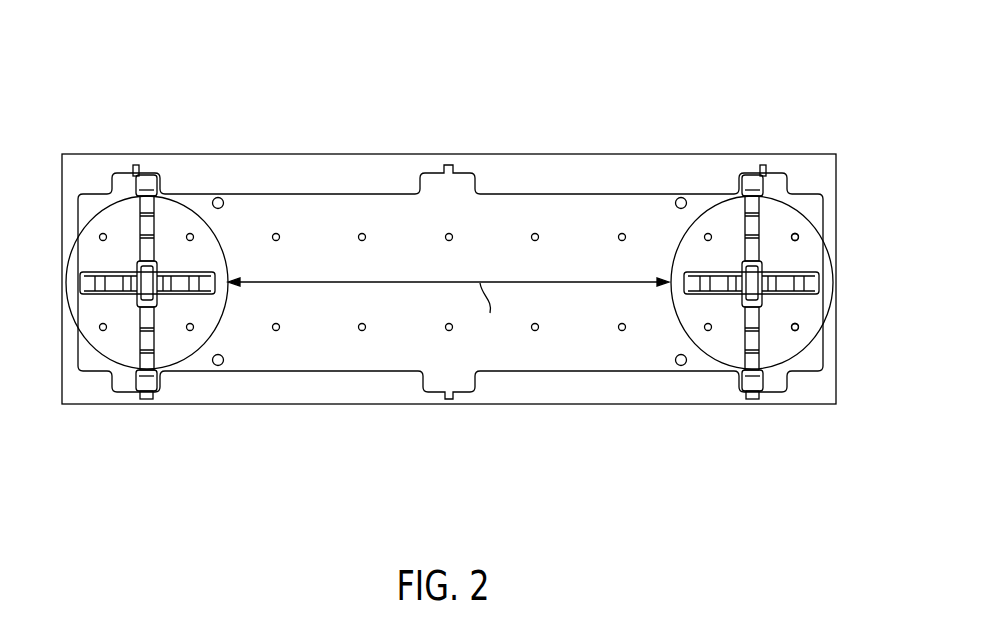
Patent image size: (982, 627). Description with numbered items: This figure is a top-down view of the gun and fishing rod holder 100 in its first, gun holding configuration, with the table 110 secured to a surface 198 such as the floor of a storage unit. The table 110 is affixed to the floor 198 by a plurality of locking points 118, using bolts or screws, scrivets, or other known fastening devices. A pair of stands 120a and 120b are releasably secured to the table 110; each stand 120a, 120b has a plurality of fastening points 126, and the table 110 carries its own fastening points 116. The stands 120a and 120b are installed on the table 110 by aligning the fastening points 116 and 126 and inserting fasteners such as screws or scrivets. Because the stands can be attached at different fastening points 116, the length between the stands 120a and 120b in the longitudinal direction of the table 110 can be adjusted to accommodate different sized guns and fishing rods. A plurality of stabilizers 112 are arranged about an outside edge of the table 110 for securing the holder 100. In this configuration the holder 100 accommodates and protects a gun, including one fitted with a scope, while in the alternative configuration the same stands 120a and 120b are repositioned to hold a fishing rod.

The gun and fishing rod holder 100 is at (240, 52).
The table 110 is at (504, 251).
The stabilizers 112 is at (137, 400).
The fastening points 116 is at (364, 232).
The locking points 118 is at (221, 198).
The stand 120a is at (62, 140).
The stand 120b is at (837, 140).
The fastening points 126 is at (103, 242).
The surface 198 is at (802, 404).